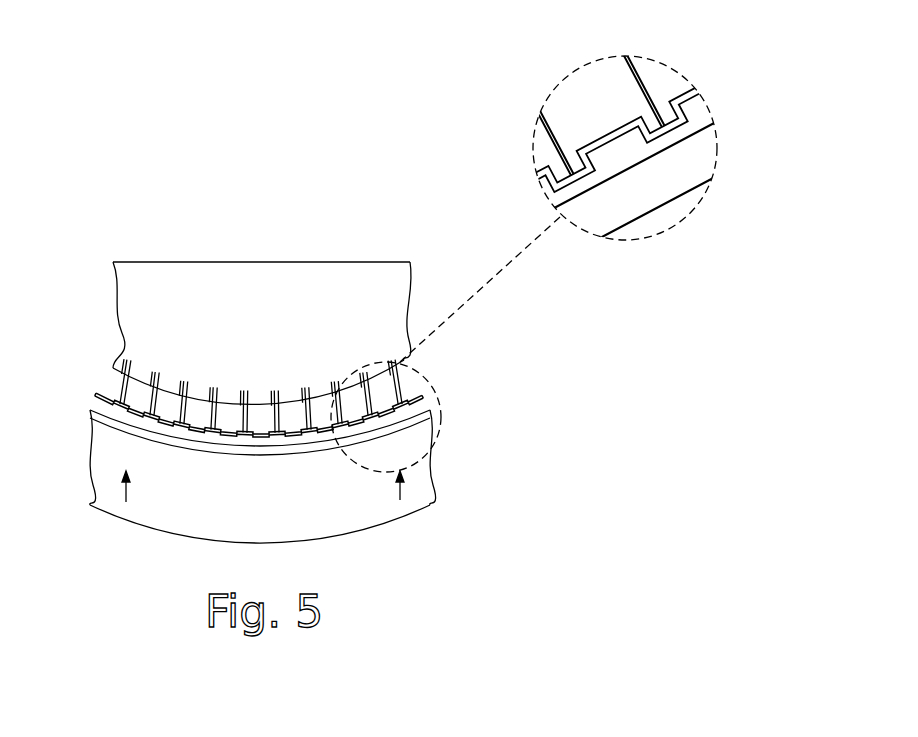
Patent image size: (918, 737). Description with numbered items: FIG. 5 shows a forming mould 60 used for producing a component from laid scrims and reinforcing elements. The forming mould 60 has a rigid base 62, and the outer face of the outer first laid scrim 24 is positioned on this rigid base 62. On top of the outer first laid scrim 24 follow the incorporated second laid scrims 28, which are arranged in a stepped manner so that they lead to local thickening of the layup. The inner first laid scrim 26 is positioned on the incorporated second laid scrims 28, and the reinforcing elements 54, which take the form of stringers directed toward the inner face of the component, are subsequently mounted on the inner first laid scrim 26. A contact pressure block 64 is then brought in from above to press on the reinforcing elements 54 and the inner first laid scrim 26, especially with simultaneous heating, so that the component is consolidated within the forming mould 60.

The outer first laid scrim 24 is at (408, 362).
The inner first laid scrim 26 is at (128, 420).
The incorporated second laid scrims 28 is at (128, 420).
The reinforcing elements 54 is at (213, 417).
The forming mould 60 is at (251, 230).
The rigid base 62 is at (417, 485).
The contact pressure block 64 is at (363, 278).